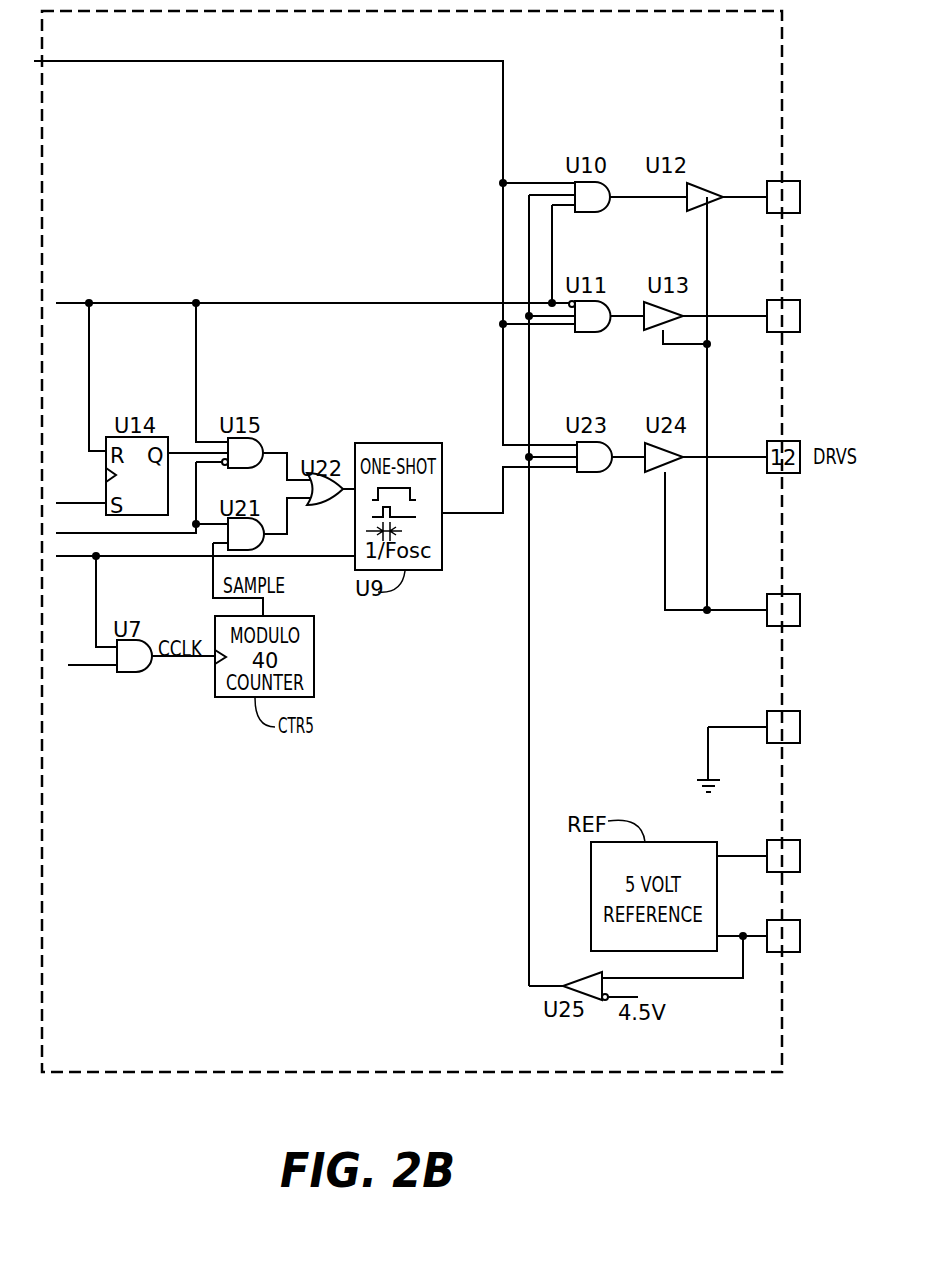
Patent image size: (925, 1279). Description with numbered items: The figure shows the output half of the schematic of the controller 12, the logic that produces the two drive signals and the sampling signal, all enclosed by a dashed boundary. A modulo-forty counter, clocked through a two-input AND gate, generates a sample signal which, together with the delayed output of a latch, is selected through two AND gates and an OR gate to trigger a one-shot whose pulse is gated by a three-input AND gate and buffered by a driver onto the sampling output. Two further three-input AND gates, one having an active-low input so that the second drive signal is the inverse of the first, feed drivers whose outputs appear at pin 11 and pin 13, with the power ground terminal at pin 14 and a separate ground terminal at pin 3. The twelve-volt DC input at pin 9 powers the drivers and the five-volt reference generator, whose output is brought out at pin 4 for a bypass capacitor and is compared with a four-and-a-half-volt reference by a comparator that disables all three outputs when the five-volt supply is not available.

The controller 12 is at (203, 1073).
The DRV1 pin 11 is at (811, 197).
The DRV2 pin 13 is at (811, 316).
The PGND pin 14 is at (813, 610).
The GND pin 3 is at (783, 727).
The VS12 pin 9 is at (786, 856).
The VDD pin 4 is at (785, 936).